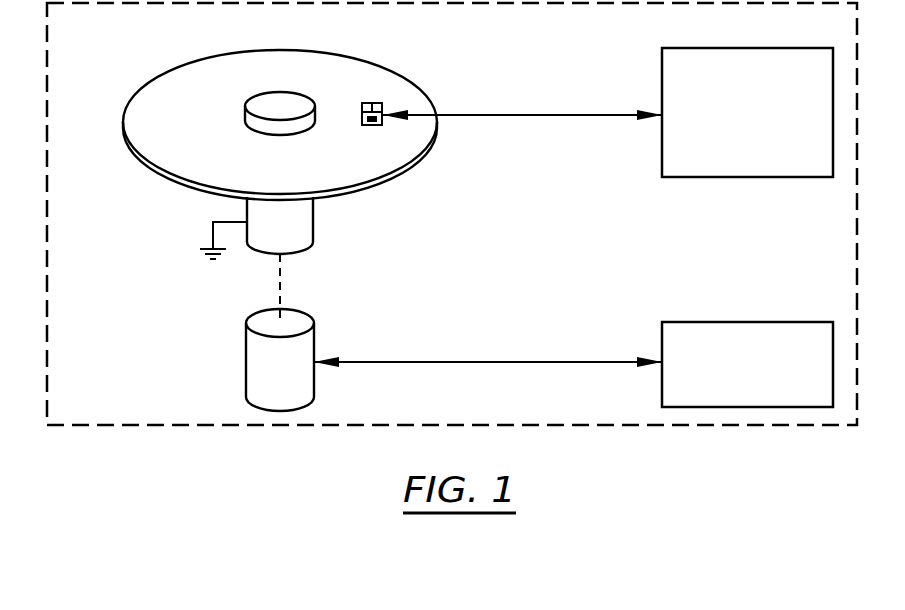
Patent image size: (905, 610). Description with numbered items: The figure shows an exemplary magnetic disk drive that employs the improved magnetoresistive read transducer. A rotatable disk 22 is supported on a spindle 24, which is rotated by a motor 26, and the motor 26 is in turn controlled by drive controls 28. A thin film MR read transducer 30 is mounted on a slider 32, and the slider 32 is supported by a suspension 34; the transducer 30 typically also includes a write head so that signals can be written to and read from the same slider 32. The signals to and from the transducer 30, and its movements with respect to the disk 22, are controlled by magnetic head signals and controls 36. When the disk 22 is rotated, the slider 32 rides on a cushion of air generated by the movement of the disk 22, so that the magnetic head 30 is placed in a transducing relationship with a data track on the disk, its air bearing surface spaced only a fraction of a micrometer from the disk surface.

The rotatable disk 22 is at (160, 87).
The spindle 24 is at (315, 225).
The motor 26 is at (245, 363).
The drive controls 28 is at (755, 322).
The thin film MR read transducer 30 is at (373, 120).
The slider 32 is at (373, 120).
The suspension 34 is at (517, 118).
The magnetic head signals and controls 36 is at (755, 48).